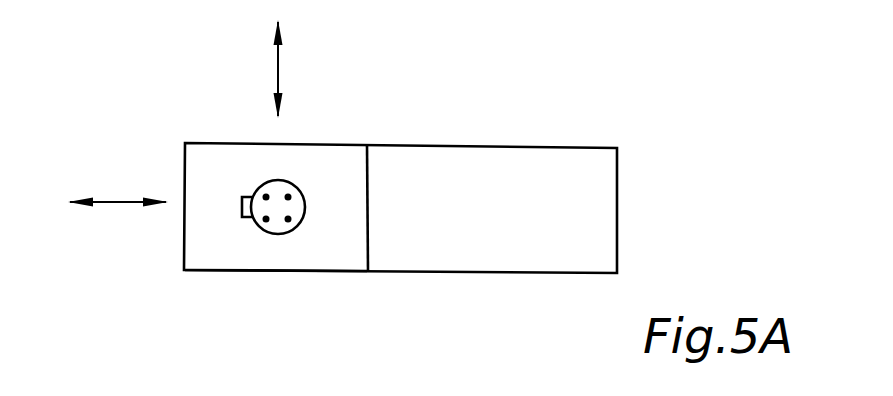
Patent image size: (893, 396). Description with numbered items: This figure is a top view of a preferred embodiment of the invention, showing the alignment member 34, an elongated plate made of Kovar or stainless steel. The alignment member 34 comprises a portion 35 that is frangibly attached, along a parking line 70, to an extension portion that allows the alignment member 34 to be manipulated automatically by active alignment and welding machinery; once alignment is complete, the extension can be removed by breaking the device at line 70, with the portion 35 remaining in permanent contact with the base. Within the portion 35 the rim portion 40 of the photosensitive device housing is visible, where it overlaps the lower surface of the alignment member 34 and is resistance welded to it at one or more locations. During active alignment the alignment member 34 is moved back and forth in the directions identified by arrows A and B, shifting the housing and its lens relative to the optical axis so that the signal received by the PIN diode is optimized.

The alignment member 34 is at (575, 247).
The portion 35 is at (307, 253).
The parking line 70 is at (367, 194).
The rim portion 40 is at (255, 196).
The arrow A is at (108, 202).
The arrow B is at (278, 87).